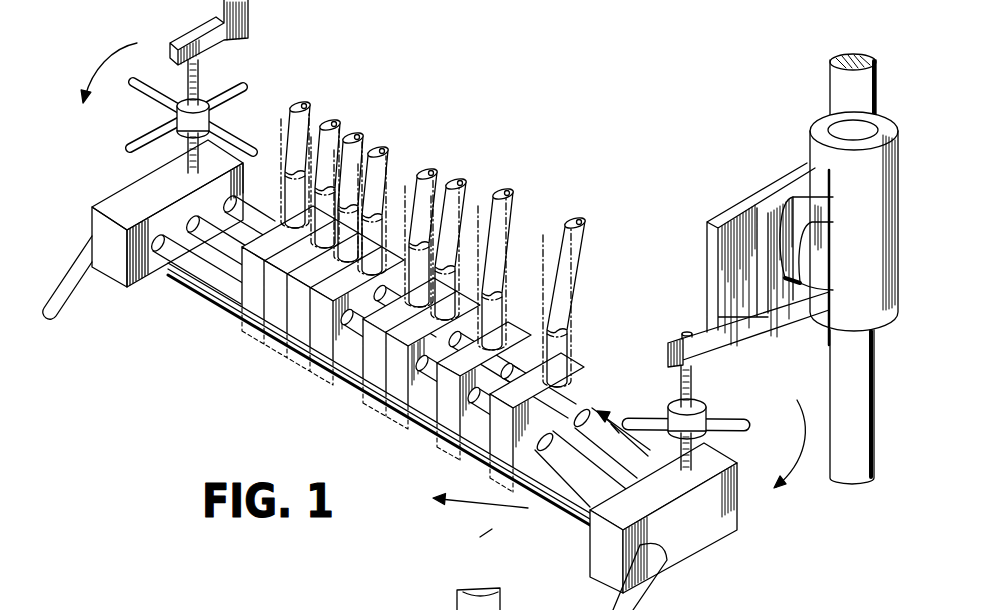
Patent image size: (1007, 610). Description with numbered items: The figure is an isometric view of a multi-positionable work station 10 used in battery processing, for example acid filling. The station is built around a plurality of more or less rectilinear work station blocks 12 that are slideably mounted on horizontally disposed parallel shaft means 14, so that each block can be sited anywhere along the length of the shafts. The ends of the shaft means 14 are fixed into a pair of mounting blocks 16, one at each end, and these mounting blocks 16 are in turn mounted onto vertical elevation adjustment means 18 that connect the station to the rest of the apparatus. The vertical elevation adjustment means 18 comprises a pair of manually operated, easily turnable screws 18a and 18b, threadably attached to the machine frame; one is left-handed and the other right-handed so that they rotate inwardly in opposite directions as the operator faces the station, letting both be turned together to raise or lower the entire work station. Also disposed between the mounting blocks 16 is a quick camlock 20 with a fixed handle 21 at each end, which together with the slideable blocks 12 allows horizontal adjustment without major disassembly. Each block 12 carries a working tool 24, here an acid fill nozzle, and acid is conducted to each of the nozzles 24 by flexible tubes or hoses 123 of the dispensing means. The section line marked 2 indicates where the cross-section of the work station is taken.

The multi-positionable work station 10 is at (414, 317).
The work station blocks 12 is at (398, 363).
The shaft means 14 is at (477, 408).
The mounting blocks 16 is at (113, 202).
The vertical elevation adjustment means 18 is at (207, 88).
The screw 18a is at (213, 114).
The screw 18b is at (710, 437).
The quick camlock 20 is at (560, 498).
The fixed handle 21 is at (63, 280).
The working tools 24 is at (395, 228).
The flexible tubes or hoses 123 is at (286, 160).
The section line 2- 2 is at (534, 457).